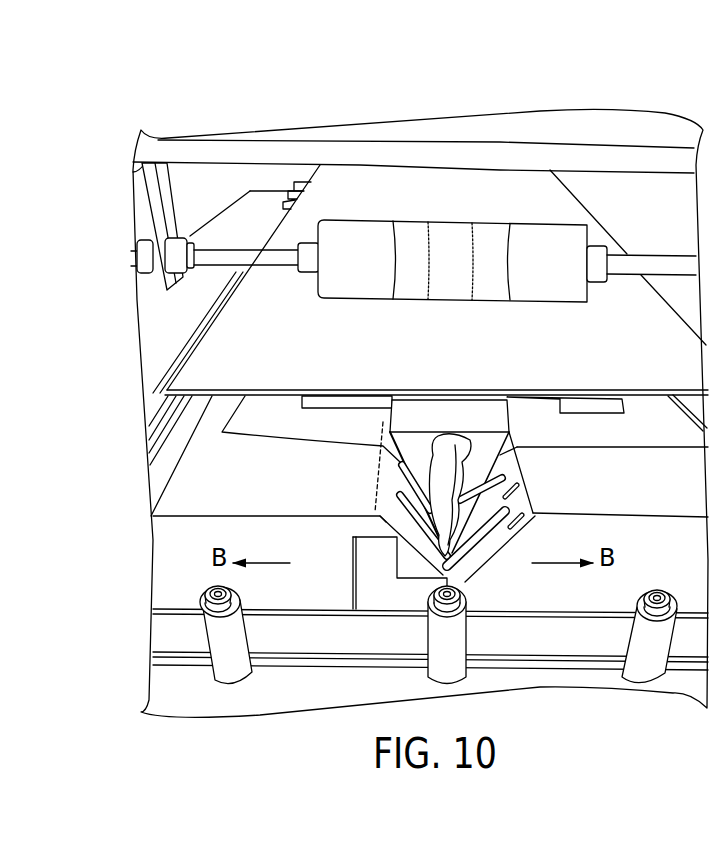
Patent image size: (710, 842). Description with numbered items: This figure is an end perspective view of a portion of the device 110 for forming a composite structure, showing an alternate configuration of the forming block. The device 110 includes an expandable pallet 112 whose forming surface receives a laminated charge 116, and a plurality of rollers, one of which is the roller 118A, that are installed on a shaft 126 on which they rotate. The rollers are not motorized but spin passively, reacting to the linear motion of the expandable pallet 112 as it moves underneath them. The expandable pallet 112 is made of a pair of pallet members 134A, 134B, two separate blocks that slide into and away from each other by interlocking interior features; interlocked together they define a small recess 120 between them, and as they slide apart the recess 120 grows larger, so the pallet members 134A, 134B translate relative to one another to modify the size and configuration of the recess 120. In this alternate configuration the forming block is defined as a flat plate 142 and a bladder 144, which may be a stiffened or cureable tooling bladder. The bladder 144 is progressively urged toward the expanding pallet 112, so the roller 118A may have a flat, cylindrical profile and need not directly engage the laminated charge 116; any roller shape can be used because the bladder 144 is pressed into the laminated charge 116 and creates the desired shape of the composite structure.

The device 110 is at (230, 128).
The expandable pallet 112 is at (115, 567).
The laminated charge 116 is at (288, 408).
The roller 118A is at (450, 202).
The recess 120 is at (436, 555).
The shaft 126 is at (238, 237).
The pallet member 134A is at (313, 583).
The pallet member 134B is at (540, 594).
The flat plate 142 is at (232, 336).
The bladder 144 is at (392, 419).